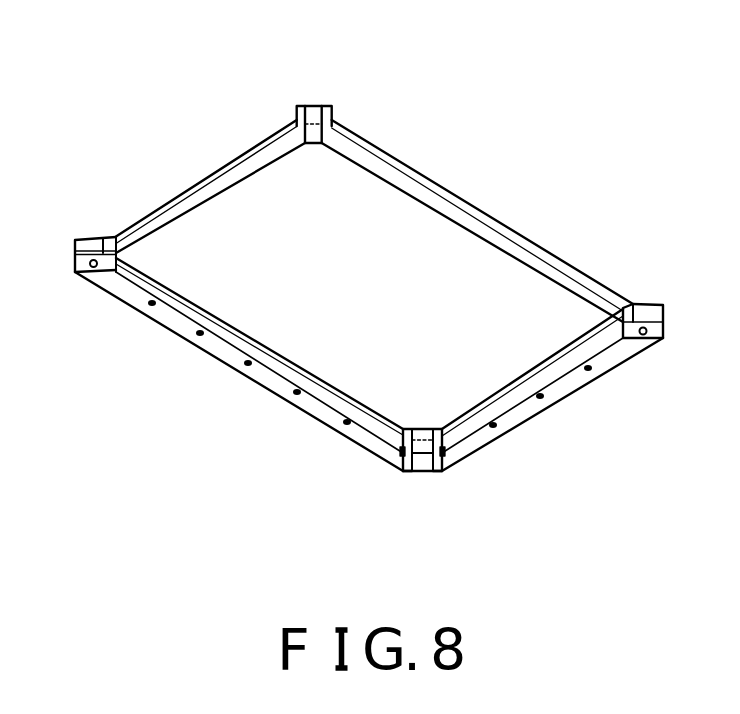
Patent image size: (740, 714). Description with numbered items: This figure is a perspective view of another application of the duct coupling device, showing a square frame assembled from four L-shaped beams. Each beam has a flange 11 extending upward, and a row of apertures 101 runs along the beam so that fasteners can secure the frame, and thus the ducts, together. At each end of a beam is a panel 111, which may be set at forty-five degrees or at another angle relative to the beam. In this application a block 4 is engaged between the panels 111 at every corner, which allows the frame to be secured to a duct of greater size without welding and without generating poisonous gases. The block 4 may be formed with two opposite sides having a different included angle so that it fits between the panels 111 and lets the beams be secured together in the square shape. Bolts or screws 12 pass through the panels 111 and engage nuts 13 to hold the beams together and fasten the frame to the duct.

The block 4 is at (315, 112).
The flange 11 is at (198, 191).
The bolt or screw 12 is at (93, 268).
The nut 13 is at (400, 460).
The aperture 101 is at (152, 306).
The panel 111 is at (413, 472).